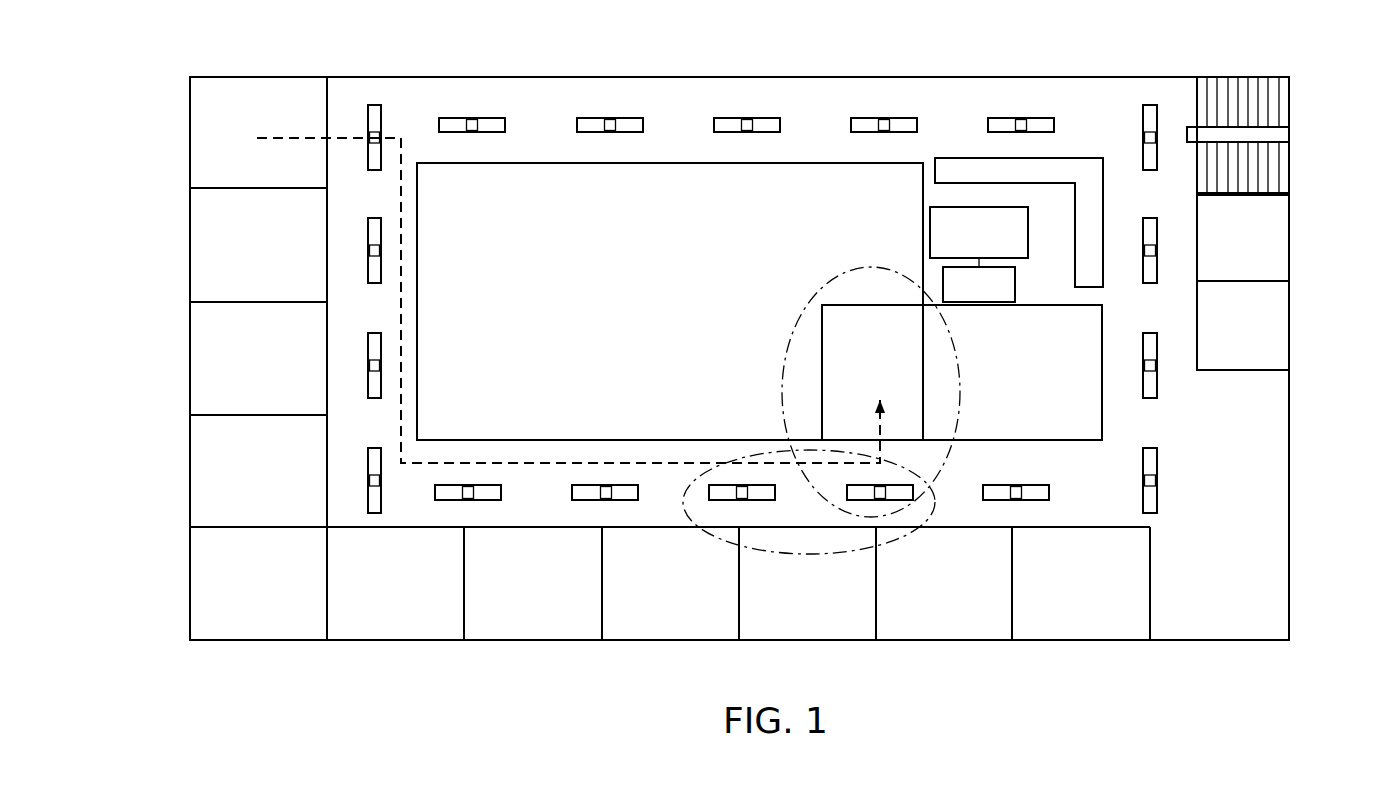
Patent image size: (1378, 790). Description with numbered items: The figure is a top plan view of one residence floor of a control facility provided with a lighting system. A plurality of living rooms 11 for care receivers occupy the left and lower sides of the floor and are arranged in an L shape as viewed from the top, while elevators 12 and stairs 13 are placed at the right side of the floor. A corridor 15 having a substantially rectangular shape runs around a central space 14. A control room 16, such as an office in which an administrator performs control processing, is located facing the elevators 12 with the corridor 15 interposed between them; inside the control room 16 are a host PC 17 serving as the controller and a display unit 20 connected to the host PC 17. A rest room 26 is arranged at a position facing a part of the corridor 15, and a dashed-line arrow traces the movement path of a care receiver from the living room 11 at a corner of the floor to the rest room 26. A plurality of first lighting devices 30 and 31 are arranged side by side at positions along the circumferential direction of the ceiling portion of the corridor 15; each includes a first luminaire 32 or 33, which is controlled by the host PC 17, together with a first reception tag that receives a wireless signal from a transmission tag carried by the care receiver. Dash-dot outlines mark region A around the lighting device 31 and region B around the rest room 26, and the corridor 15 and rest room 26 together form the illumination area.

The living room 11 is at (239, 102).
The elevator 12 is at (1272, 244).
The stairs 13 is at (1275, 106).
The central space 14 is at (670, 301).
The corridor 15 is at (551, 90).
The control room 16 is at (1045, 205).
The host PC 17 is at (1017, 283).
The display unit 20 is at (1032, 233).
The rest room 26 is at (845, 345).
The first lighting device 30 is at (365, 117).
The first lighting device 31 is at (860, 502).
The first luminaire 32 is at (368, 152).
The first luminaire 33 is at (897, 492).
The region A is at (900, 538).
The region B is at (840, 268).